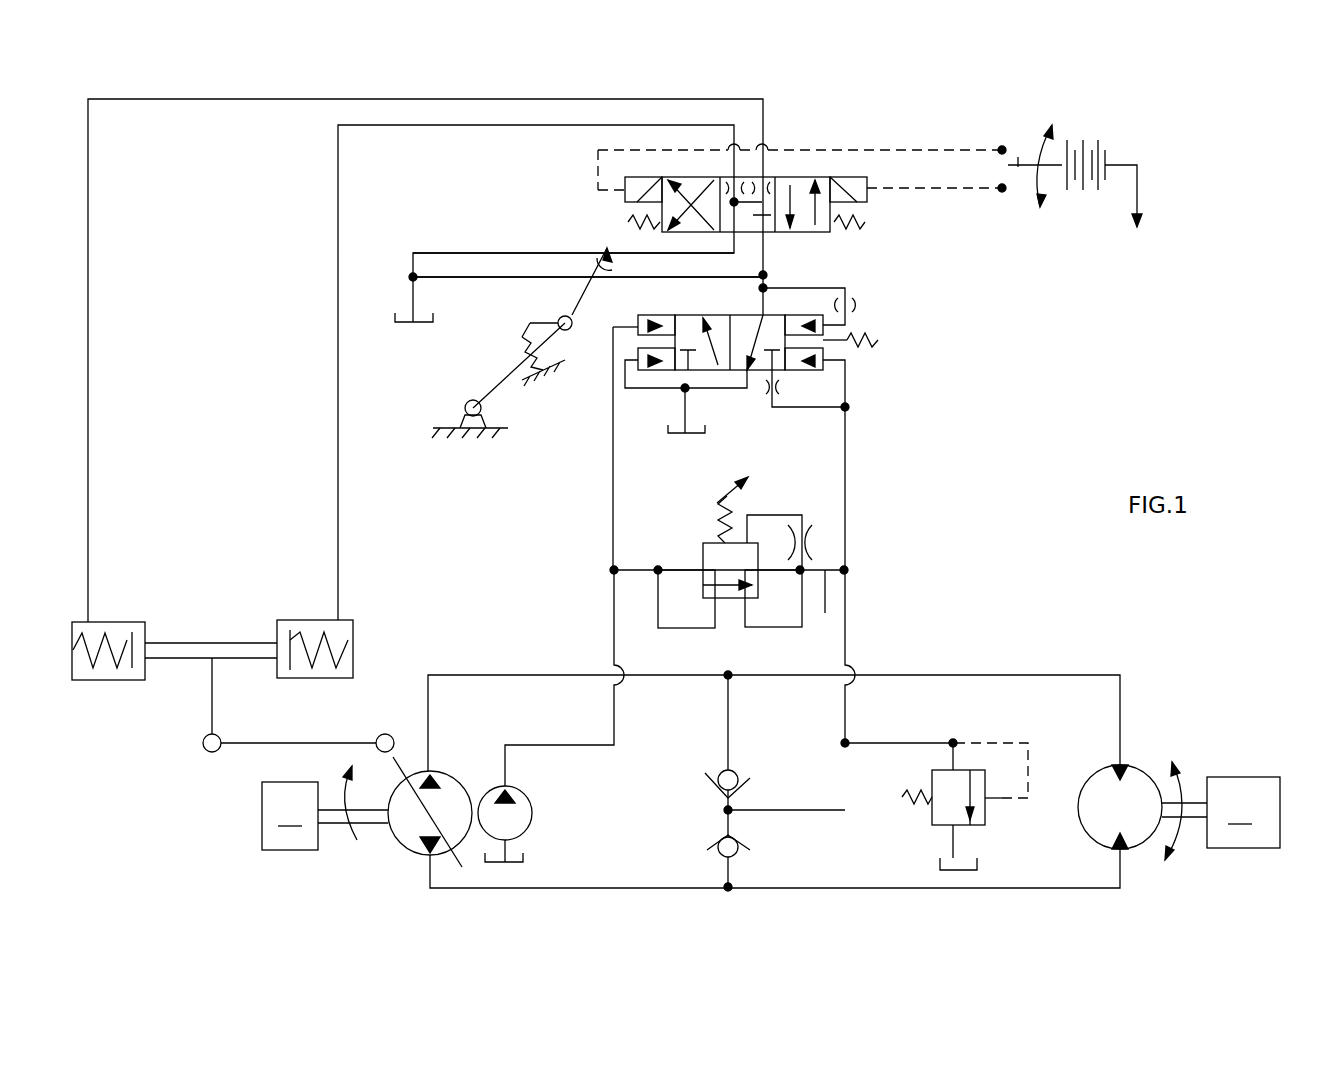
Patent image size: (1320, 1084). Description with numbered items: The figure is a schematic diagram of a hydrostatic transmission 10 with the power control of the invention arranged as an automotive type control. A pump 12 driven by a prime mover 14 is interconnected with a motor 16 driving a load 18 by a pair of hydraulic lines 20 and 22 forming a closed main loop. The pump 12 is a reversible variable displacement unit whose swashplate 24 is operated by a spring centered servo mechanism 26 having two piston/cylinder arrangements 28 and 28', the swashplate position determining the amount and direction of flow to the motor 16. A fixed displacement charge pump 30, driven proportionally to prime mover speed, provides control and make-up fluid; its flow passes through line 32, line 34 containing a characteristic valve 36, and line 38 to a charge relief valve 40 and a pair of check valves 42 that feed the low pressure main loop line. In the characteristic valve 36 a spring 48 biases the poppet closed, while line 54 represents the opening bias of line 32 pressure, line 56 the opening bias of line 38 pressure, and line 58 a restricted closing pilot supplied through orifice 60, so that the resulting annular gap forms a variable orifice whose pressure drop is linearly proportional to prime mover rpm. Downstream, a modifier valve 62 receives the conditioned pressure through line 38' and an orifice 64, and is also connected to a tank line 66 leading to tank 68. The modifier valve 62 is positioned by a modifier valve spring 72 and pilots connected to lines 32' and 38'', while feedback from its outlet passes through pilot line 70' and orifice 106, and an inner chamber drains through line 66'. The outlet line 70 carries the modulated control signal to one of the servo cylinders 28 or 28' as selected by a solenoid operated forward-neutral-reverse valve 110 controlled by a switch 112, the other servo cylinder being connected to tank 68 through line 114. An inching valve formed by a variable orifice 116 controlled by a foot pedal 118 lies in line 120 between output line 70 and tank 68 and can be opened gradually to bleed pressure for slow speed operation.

The transmission 10 is at (1038, 633).
The pump 12 is at (440, 775).
The prime mover 14 is at (325, 808).
The motor 16 is at (1137, 768).
The load 18 is at (1221, 812).
The hydraulic line 20 is at (667, 675).
The hydraulic line 22 is at (613, 888).
The swashplate 24 is at (397, 757).
The servo mechanism 26 is at (200, 627).
The piston/cylinder arrangement 28 is at (347, 622).
The piston/cylinder arrangement 28' is at (120, 625).
The charge pump 30 is at (530, 803).
The line 32 is at (564, 678).
The line 32' is at (584, 448).
The line 34 is at (821, 606).
The characteristic valve 36 is at (692, 555).
The line 38 is at (879, 656).
The line 38' is at (866, 488).
The line 38'' is at (873, 385).
The charge relief valve 40 is at (932, 815).
The check valves 42 is at (740, 800).
The spring 48 is at (722, 493).
The line 54 is at (657, 620).
The line 56 is at (775, 628).
The line 58 is at (780, 513).
The restrictive orifice 60 is at (812, 542).
The modifier valve 62 is at (690, 313).
The orifice 64 is at (778, 400).
The tank line 66 is at (724, 387).
The line 66' is at (647, 382).
The tank 68 is at (405, 327).
The line 70 is at (763, 305).
The pilot line 70' is at (859, 279).
The modifier valve spring 72 is at (878, 340).
The orifice 106 is at (855, 300).
The forward-neutral-reverse valve 110 is at (808, 180).
The switch 112 is at (1018, 157).
The line 114 is at (485, 253).
The variable orifice 116 is at (570, 290).
The foot pedal 118 is at (497, 370).
The line 120 is at (445, 277).